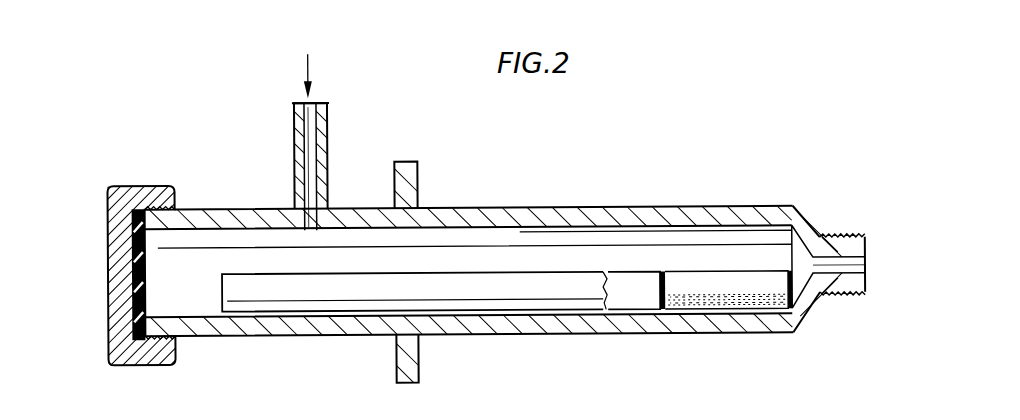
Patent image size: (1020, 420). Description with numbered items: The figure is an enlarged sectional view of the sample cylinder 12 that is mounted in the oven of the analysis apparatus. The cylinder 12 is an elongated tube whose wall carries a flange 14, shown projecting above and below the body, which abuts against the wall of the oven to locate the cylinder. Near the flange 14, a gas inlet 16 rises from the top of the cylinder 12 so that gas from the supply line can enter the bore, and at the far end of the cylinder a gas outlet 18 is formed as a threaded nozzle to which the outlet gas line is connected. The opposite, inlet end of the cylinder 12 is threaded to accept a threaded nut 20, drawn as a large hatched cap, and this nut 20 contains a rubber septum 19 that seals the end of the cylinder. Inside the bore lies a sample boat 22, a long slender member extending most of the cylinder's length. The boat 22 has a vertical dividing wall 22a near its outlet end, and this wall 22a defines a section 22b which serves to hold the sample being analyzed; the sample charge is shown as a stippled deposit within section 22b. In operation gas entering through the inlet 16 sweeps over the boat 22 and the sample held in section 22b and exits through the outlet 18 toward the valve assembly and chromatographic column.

The cylinder 12 is at (558, 212).
The flange 14 is at (418, 178).
The gas inlet 16 is at (325, 147).
The gas outlet 18 is at (836, 272).
The rubber septum 19 is at (135, 260).
The threaded nut 20 is at (130, 187).
The sample boat 22 is at (555, 272).
The vertical dividing wall 22a is at (672, 275).
The section 22b is at (732, 290).